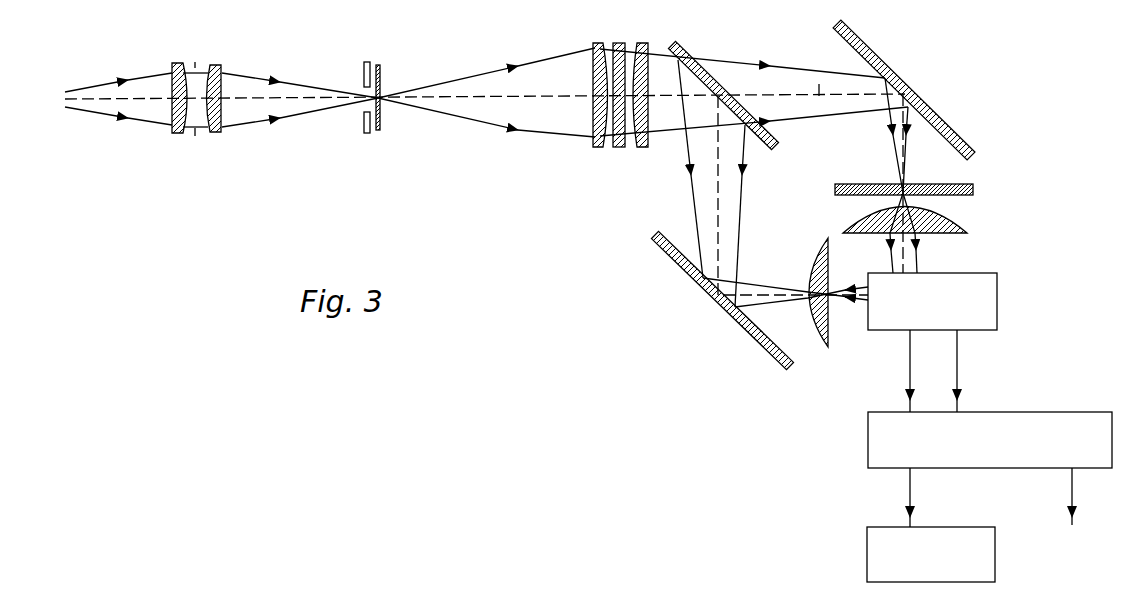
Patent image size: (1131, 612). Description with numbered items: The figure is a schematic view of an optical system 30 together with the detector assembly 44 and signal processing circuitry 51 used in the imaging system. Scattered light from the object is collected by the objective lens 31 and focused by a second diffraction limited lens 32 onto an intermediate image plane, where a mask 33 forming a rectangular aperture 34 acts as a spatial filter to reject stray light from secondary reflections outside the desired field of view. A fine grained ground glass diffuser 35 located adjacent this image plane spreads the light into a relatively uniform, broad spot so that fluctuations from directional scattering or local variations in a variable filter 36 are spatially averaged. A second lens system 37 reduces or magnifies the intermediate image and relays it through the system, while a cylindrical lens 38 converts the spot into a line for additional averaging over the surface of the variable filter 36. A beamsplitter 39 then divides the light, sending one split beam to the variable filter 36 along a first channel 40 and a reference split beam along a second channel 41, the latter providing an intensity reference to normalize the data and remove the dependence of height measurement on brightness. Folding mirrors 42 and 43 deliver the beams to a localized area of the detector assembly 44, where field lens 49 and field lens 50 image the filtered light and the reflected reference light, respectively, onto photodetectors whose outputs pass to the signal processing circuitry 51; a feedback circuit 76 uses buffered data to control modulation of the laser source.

The optical system 30 is at (462, 210).
The objective lens 31 is at (170, 132).
The second diffraction limited lens 32 is at (218, 130).
The mask 33 is at (367, 136).
The rectangular aperture 34 is at (363, 89).
The fine grained ground glass diffuser 35 is at (380, 130).
The variable filter 36 is at (860, 184).
The second lens system 37 is at (625, 152).
The cylindrical lens 38 is at (613, 146).
The beamsplitter 39 is at (702, 72).
The first channel 40 is at (819, 84).
The second channel 41 is at (718, 177).
The mirror 42 is at (953, 130).
The mirror 43 is at (695, 275).
The detector assembly 44 is at (1000, 314).
The field lens 49 is at (962, 227).
The field lens 50 is at (826, 347).
The signal processing circuitry 51 is at (866, 435).
The feedback circuit 76 is at (867, 558).